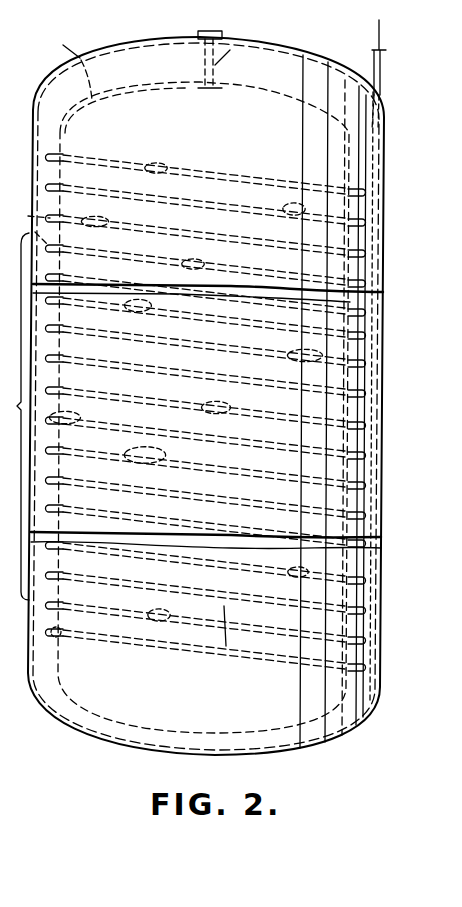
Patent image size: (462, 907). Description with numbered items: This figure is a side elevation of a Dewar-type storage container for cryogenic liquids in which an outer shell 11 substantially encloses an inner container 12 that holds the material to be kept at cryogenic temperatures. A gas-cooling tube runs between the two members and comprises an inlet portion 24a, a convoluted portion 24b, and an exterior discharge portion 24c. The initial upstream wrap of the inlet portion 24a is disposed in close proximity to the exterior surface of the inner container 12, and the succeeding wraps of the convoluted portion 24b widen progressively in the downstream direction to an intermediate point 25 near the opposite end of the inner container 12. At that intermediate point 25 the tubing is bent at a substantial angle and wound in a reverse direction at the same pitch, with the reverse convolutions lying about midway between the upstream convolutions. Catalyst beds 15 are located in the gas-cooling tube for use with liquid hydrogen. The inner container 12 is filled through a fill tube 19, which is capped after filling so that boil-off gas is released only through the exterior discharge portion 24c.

The outer shell 11 is at (388, 601).
The inner container 12 is at (241, 88).
The catalyst beds 15 is at (161, 160).
The fill tube 19 is at (231, 37).
The inlet portion 24a is at (63, 65).
The convoluted portion 24b is at (132, 437).
The exterior discharge portion 24c is at (372, 75).
The intermediate point 25 is at (59, 637).